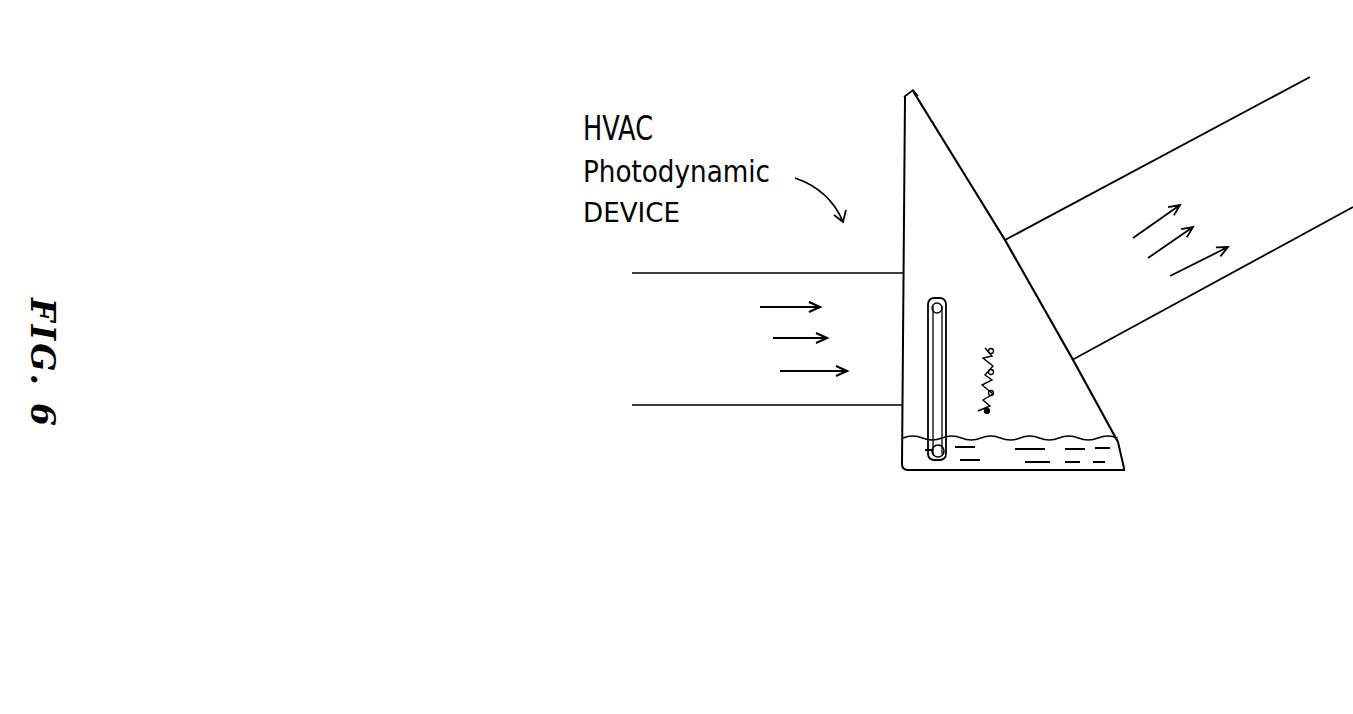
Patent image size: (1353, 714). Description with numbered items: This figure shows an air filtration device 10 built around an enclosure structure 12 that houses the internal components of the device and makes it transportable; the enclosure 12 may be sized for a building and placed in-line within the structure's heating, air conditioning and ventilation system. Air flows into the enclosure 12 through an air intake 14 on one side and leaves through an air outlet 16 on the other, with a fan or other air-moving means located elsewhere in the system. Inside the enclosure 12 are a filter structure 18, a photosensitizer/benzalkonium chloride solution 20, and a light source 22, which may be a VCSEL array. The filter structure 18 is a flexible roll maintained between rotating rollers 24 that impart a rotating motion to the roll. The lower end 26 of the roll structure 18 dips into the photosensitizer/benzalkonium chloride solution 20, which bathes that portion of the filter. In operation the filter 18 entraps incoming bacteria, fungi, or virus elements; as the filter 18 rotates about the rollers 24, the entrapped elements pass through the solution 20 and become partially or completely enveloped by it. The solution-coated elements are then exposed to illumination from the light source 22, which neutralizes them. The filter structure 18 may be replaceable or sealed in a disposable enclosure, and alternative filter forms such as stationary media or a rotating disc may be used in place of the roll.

The air filtration device 10 is at (1013, 247).
The enclosure structure 12 is at (968, 180).
The air intake 14 is at (788, 407).
The air outlet 16 is at (1180, 303).
The filter structure 18 is at (909, 402).
The photosensitizer/benzalkonium chloride solution 20 is at (1055, 472).
The light source 22 is at (978, 420).
The rotating rollers 24 is at (947, 297).
The lower end 26 is at (935, 456).